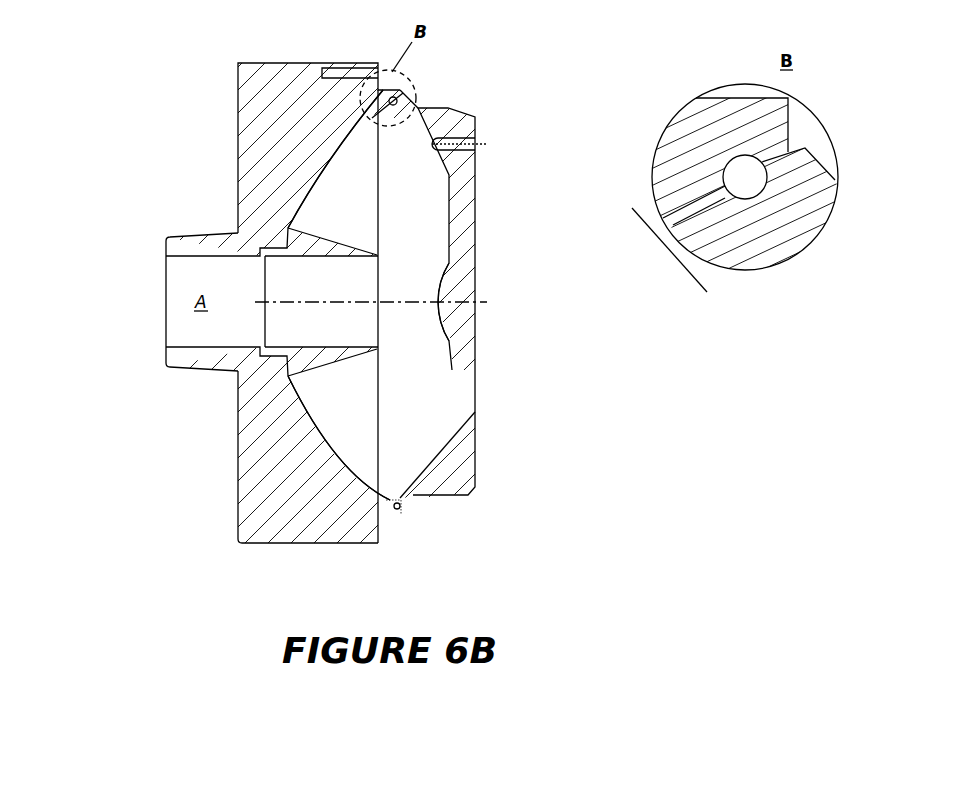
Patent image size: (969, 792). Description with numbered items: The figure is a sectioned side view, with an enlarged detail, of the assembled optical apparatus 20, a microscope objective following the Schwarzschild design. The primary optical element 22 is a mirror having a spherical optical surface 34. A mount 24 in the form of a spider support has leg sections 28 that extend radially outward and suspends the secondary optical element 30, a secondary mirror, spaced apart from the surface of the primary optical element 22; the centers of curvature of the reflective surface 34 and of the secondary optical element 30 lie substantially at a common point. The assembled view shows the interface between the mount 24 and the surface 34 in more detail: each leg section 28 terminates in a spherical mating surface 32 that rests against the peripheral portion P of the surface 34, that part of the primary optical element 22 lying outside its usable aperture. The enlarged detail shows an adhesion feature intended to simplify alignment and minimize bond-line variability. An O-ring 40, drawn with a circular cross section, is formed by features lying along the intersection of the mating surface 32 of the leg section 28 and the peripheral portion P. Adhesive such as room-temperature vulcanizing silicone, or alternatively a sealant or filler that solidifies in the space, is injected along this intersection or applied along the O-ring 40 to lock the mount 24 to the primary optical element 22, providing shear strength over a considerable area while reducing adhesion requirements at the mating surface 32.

The optical apparatus 20 is at (113, 100).
The primary optical element 22 is at (238, 497).
The mount 24 is at (475, 412).
The leg section 28 is at (413, 497).
The secondary optical element 30 is at (447, 265).
The spherical mating surface 32 is at (390, 507).
The spherical optical surface 34 is at (331, 453).
The O-ring 40 is at (762, 185).
The peripheral portion P is at (702, 198).